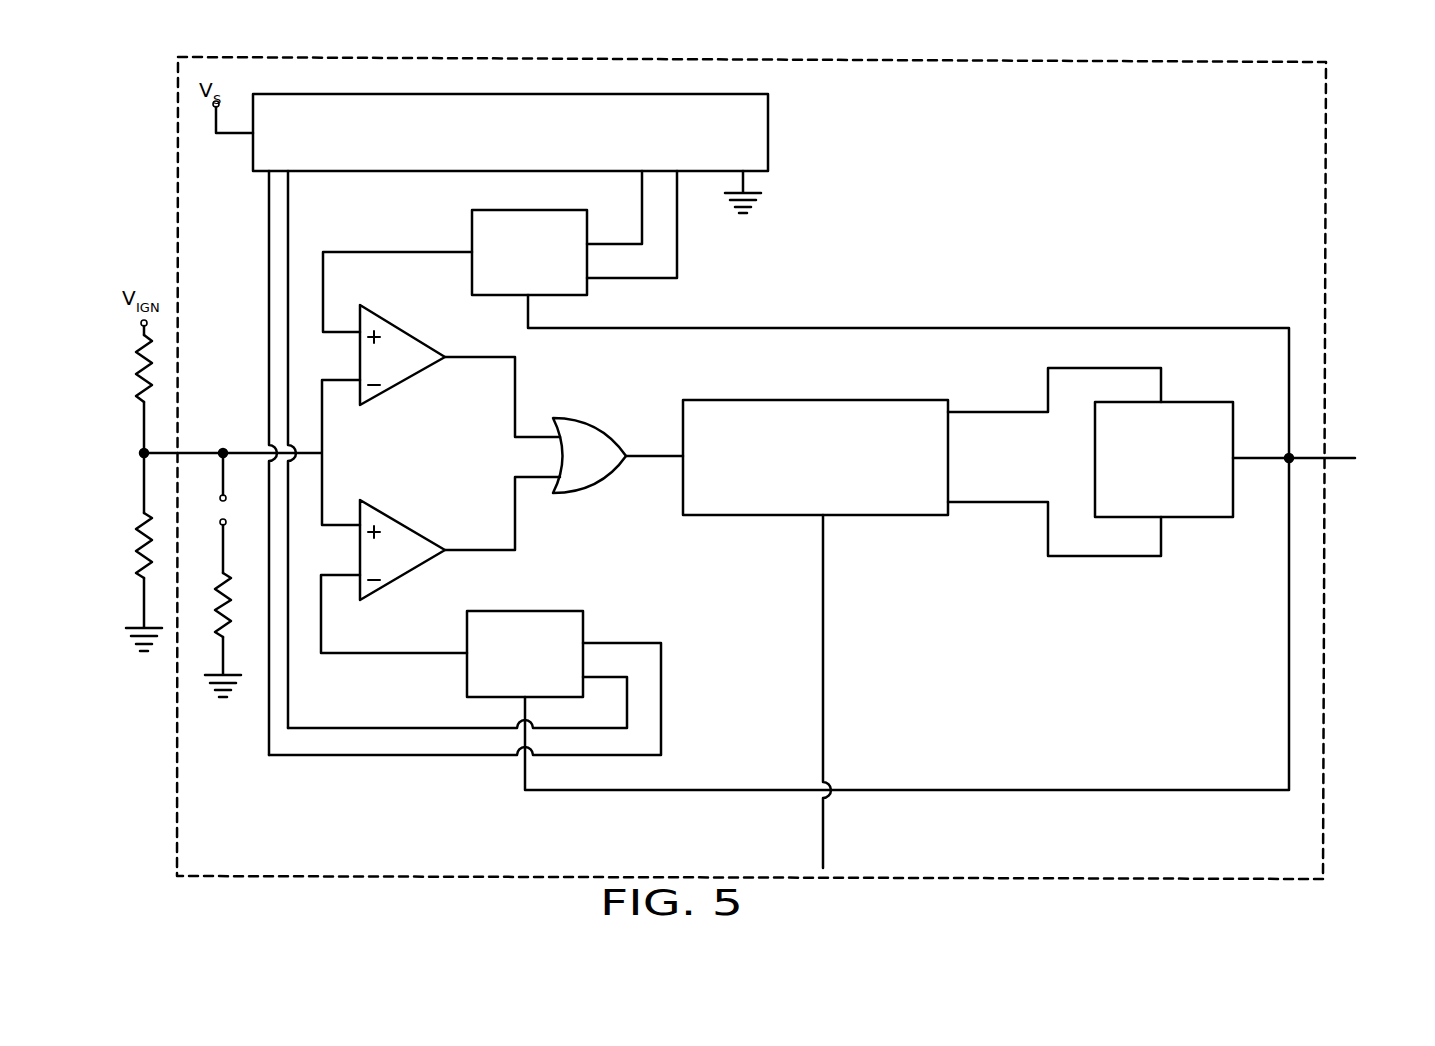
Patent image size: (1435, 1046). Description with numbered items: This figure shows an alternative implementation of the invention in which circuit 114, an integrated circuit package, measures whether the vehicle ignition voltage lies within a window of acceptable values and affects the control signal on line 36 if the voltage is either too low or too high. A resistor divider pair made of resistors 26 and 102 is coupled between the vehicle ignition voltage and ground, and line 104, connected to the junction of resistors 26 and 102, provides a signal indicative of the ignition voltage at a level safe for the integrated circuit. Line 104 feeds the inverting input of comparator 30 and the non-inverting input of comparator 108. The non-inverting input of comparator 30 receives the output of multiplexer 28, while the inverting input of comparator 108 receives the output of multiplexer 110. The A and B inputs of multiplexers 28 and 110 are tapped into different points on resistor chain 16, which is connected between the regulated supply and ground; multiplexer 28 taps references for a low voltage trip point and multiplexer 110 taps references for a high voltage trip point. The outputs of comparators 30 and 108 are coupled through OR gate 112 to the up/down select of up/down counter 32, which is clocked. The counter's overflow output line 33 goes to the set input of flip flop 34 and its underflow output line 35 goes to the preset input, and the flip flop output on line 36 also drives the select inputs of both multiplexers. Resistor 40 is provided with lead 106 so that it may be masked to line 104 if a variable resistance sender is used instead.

The resistor chain 16 is at (770, 142).
The resistor 26 is at (135, 377).
The multiplexer 28 is at (470, 240).
The comparator 30 is at (427, 370).
The up/down counter 32 is at (788, 400).
The overflow output line 33 is at (1127, 365).
The flip flop 34 is at (1215, 517).
The underflow output line 35 is at (1122, 557).
The line 36 is at (1337, 457).
The resistor 40 is at (217, 595).
The resistor 102 is at (135, 547).
The line 104 is at (172, 455).
The lead 106 is at (220, 510).
The comparator 108 is at (427, 535).
The multiplexer 110 is at (513, 610).
The OR gate 112 is at (603, 430).
The circuit 114 is at (1322, 748).